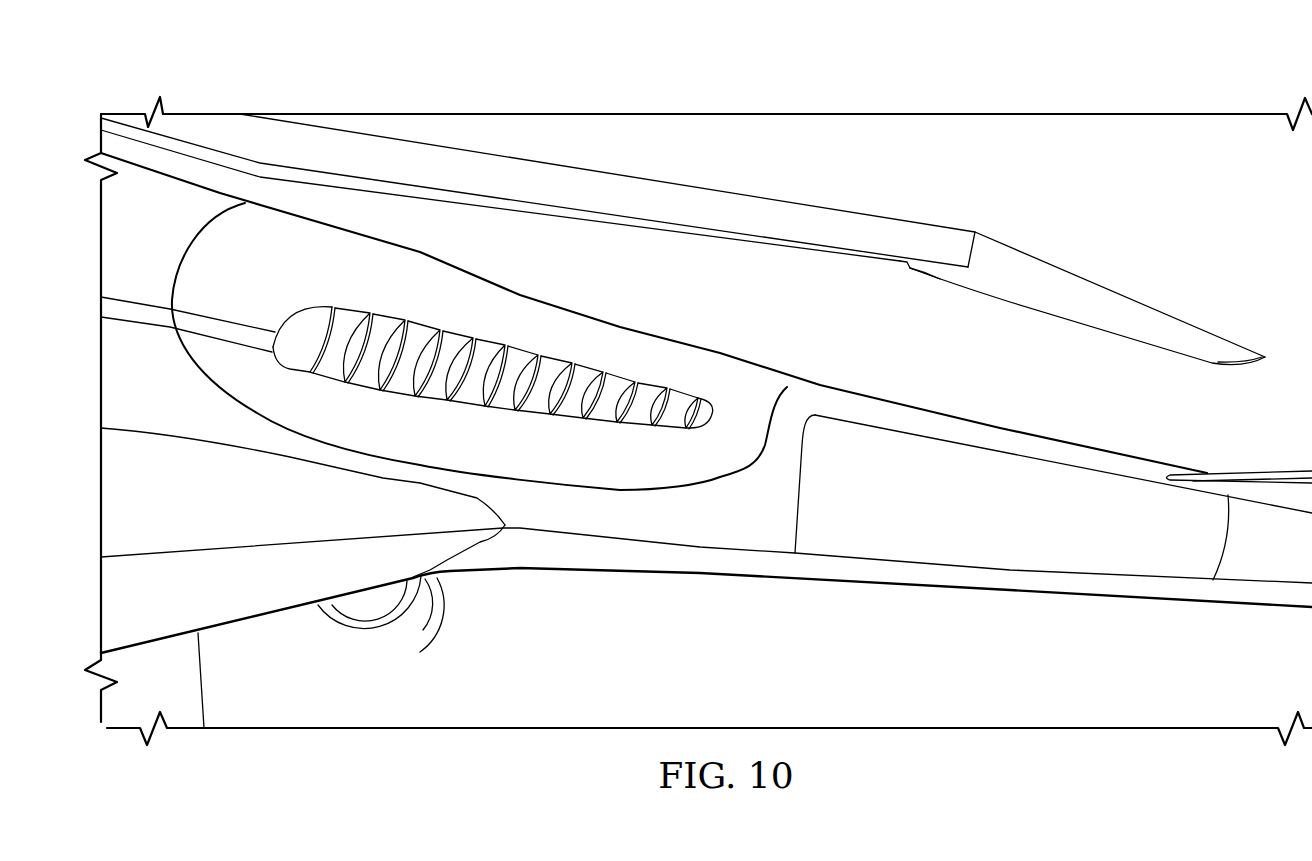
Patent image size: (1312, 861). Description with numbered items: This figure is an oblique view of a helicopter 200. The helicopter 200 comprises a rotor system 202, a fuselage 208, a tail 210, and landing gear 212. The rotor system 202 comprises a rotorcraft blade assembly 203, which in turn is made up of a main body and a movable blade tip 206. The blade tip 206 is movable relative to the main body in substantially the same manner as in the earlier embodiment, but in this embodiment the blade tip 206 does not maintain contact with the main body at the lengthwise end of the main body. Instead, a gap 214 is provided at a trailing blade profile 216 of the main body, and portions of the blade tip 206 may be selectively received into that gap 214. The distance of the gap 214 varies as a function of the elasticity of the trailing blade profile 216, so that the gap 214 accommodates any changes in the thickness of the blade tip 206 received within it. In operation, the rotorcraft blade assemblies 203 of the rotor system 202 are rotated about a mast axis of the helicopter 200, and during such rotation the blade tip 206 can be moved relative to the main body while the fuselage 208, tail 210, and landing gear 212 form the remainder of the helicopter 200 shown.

The helicopter 200 is at (872, 638).
The rotor system 202 is at (198, 126).
The rotorcraft blade assembly 203 is at (765, 190).
The movable blade tip 206 is at (836, 222).
The fuselage 208 is at (223, 186).
The tail 210 is at (1048, 600).
The landing gear 212 is at (421, 665).
The gap 214 is at (910, 270).
The trailing blade profile 216 is at (896, 280).